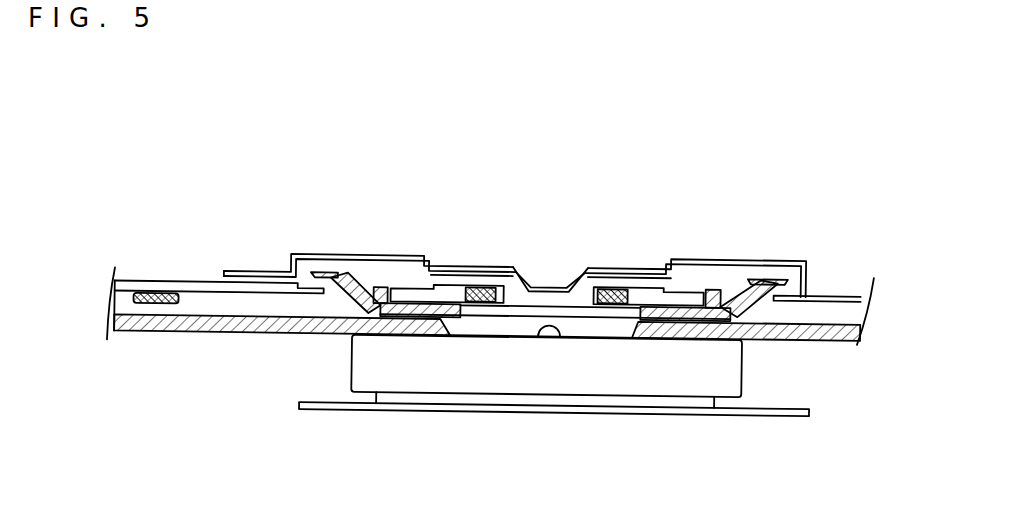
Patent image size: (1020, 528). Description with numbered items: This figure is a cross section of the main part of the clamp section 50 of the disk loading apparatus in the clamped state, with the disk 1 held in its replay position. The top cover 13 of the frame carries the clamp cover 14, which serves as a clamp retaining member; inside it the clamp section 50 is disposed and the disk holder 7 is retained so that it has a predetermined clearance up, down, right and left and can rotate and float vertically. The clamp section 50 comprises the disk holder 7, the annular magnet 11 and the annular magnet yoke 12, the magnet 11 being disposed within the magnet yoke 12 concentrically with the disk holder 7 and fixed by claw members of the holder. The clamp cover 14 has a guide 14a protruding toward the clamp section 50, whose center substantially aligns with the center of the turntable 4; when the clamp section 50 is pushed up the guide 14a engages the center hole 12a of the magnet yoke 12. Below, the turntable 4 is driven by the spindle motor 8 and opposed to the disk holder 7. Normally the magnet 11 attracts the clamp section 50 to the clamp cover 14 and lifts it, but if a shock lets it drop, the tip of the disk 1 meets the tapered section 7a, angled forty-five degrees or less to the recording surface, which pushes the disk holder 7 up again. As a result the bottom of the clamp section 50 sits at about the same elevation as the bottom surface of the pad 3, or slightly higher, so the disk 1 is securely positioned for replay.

The disk 1 is at (173, 332).
The pad 3 is at (157, 300).
The turntable 4 is at (556, 326).
The disk holder 7 is at (377, 302).
The tapered section 7a is at (352, 317).
The spindle motor 8 is at (495, 378).
The magnet 11 is at (481, 288).
The magnet yoke 12 is at (666, 288).
The center hole 12a is at (512, 288).
The top cover 13 is at (125, 286).
The clamp cover 14 is at (332, 258).
The guide 14a is at (559, 289).
The clamp section 50 is at (342, 292).